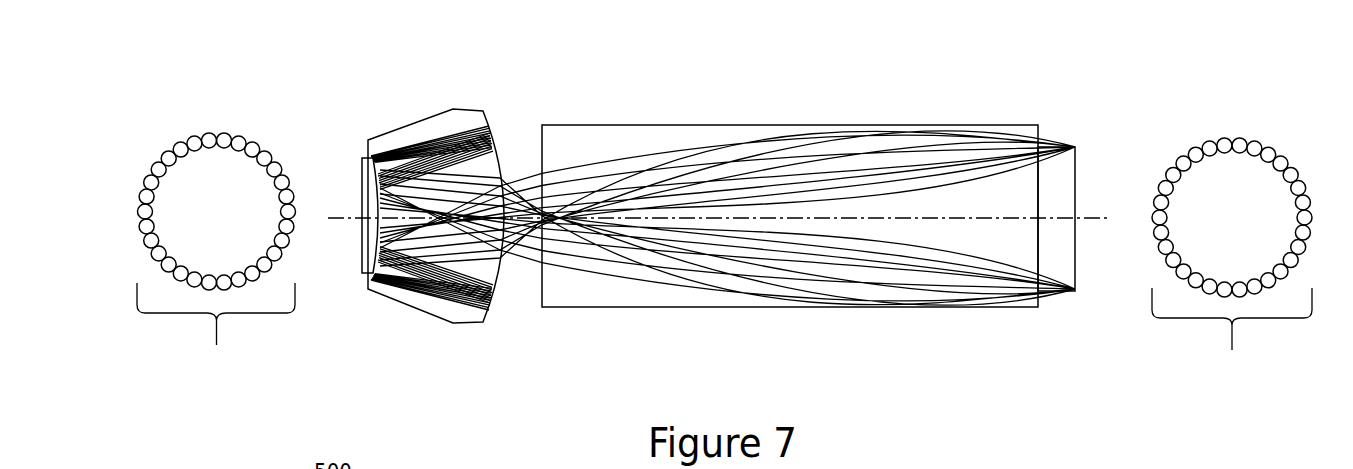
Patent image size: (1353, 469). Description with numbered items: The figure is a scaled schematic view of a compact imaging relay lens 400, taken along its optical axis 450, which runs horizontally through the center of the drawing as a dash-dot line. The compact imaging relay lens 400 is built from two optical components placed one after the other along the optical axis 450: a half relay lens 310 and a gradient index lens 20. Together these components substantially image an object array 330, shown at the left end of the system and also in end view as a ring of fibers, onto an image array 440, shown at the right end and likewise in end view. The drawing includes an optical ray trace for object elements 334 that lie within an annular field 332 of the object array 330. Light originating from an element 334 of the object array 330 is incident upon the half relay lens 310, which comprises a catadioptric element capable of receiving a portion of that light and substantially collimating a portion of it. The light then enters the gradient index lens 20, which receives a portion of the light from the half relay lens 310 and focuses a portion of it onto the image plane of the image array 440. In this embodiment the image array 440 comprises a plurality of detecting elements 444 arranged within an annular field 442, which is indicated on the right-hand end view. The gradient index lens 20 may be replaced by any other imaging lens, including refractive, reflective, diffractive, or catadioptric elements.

The compact imaging relay lens 400 is at (383, 67).
The optical axis 450 is at (340, 222).
The object array 330 is at (323, 160).
The object element 334 is at (164, 150).
The annular field 332 is at (240, 172).
The half relay lens 310 is at (408, 307).
The gradient index lens 20 is at (623, 308).
The image array 440 is at (1115, 158).
The detecting element 444 is at (1193, 148).
The annular field 442 is at (1255, 178).